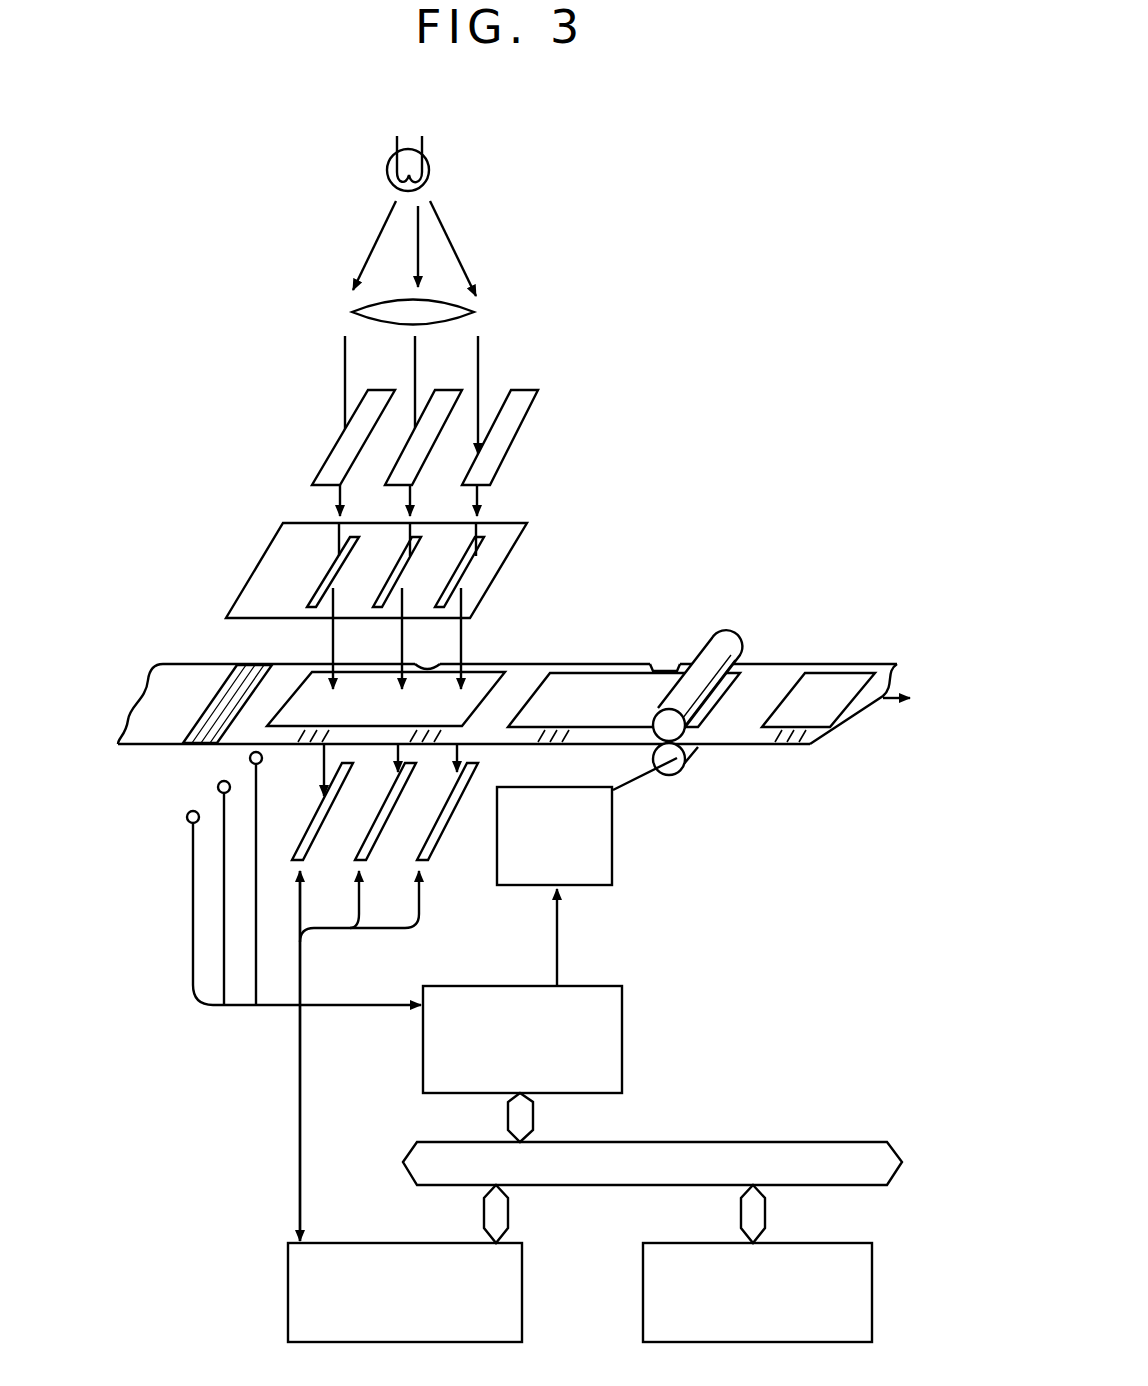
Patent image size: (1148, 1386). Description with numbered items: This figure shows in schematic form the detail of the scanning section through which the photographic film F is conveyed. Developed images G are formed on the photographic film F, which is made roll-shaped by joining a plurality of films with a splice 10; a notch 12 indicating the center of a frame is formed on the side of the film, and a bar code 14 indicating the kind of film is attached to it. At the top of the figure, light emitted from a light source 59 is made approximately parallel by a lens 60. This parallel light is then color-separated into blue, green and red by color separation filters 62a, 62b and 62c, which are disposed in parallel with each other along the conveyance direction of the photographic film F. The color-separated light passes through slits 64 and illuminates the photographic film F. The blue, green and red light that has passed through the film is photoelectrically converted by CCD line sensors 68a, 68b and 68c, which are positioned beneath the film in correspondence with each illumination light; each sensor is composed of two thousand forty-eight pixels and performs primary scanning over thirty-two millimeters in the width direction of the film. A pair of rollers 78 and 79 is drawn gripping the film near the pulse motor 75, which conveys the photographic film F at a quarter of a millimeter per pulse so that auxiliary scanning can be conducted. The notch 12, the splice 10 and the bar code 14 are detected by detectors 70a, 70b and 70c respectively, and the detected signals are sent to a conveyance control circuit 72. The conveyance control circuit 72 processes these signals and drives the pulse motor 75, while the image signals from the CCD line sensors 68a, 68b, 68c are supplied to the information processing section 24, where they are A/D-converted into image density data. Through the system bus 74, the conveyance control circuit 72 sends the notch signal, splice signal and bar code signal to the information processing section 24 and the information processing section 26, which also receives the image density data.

The light source 59 is at (429, 163).
The lens 60 is at (468, 306).
The color separation filter 62a is at (342, 440).
The color separation filter 62b is at (447, 395).
The color separation filter 62c is at (497, 462).
The slits 64 is at (520, 536).
The splice 10 is at (207, 715).
The notch 12 is at (660, 665).
The bar code 14 is at (810, 750).
The conveying roller 78 is at (735, 645).
The conveying roller 79 is at (696, 752).
The CCD line sensor 68a is at (312, 840).
The CCD line sensor 68b is at (375, 840).
The CCD line sensor 68c is at (437, 840).
The detector 70a is at (187, 821).
The detector 70b is at (218, 787).
The detector 70c is at (250, 758).
The pulse motor 75 is at (613, 850).
The conveyance control circuit 72 is at (622, 1027).
The system bus 74 is at (795, 1142).
The information processing section 24 is at (288, 1290).
The information processing section 26 is at (872, 1285).
The photographic film F is at (205, 663).
The developed image G is at (562, 689).